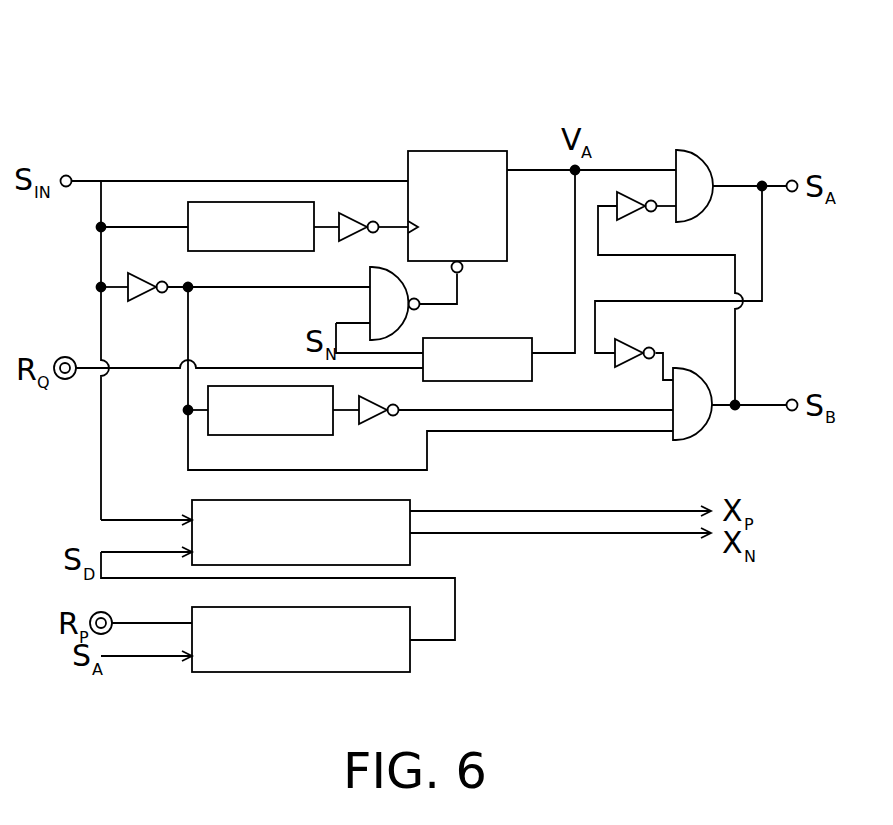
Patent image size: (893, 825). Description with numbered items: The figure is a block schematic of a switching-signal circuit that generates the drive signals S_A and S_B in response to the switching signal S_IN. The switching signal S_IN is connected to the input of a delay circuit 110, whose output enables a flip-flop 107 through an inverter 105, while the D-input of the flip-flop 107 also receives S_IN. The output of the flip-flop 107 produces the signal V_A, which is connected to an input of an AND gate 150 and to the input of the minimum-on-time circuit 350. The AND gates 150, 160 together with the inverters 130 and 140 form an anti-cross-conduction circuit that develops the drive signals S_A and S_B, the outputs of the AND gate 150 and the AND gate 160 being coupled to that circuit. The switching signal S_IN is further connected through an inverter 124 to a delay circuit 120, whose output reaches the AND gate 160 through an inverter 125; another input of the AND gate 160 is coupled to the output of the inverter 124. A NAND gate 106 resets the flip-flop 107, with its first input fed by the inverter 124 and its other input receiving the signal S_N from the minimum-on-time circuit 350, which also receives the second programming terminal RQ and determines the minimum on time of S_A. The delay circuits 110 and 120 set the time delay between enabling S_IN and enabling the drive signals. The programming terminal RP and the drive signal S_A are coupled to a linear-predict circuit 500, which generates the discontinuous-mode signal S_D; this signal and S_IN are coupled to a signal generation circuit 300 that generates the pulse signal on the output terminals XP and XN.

The delay circuit 110 is at (236, 202).
The inverter 105 is at (358, 218).
The flip-flop 107 is at (507, 215).
The NAND gate 106 is at (371, 278).
The inverter 124 is at (140, 276).
The delay circuit 120 is at (288, 386).
The inverter 125 is at (366, 424).
The minimum-on-time circuit 350 is at (487, 338).
The inverter 130 is at (625, 218).
The inverter 140 is at (630, 344).
The AND gate 150 is at (706, 162).
The AND gate 160 is at (705, 417).
The signal generation circuit 300 is at (410, 503).
The linear-predict circuit 500 is at (410, 655).